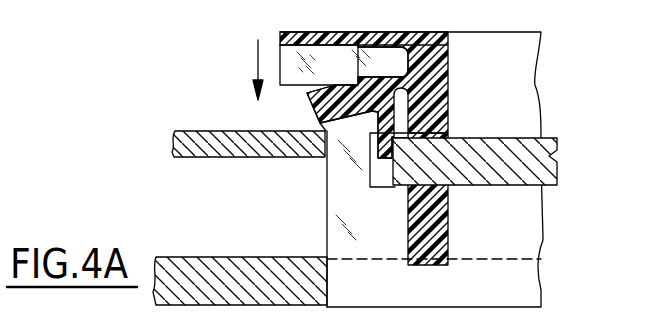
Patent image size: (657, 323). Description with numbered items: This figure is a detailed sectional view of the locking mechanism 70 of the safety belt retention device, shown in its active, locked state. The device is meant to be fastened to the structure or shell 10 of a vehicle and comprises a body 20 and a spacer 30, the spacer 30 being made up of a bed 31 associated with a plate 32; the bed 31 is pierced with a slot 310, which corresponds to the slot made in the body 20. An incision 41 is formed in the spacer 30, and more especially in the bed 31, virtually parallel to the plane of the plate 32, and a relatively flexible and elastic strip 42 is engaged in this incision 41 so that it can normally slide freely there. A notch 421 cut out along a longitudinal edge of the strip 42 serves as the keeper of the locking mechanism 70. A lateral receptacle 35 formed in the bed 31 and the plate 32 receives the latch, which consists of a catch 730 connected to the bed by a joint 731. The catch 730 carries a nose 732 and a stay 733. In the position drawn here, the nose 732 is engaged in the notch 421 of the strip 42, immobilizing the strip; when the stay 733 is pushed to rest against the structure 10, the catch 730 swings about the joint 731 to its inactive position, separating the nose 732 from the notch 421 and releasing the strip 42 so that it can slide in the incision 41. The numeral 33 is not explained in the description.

The structure or shell 10 is at (193, 153).
The body 20 is at (168, 265).
The spacer 30 is at (543, 64).
The bed 31 is at (326, 232).
The plate 32 is at (287, 32).
The lower wall 33 is at (366, 319).
The lateral receptacle 35 is at (321, 62).
The incision 41 is at (450, 134).
The strip 42 is at (560, 157).
The notch 421 is at (383, 178).
The locking mechanism 70 is at (305, 167).
The slot 310 is at (510, 225).
The catch 730 is at (373, 33).
The joint 731 is at (438, 72).
The nose 732 is at (372, 158).
The stay 733 is at (306, 96).